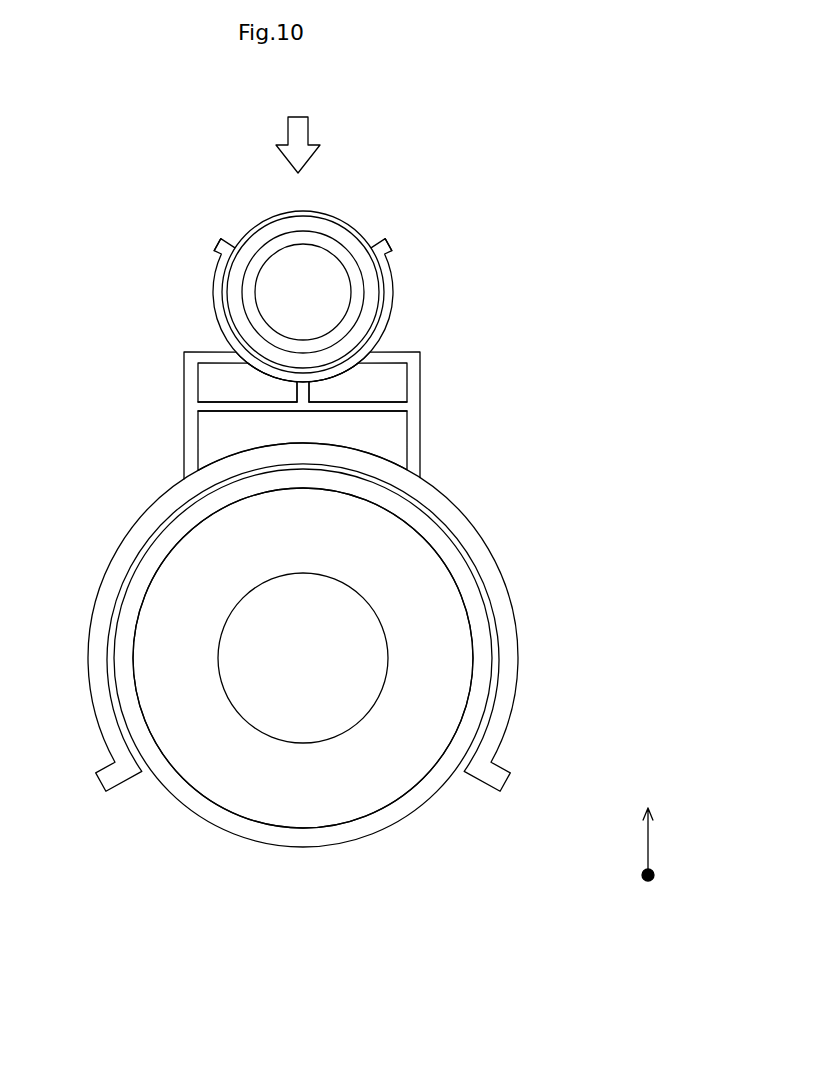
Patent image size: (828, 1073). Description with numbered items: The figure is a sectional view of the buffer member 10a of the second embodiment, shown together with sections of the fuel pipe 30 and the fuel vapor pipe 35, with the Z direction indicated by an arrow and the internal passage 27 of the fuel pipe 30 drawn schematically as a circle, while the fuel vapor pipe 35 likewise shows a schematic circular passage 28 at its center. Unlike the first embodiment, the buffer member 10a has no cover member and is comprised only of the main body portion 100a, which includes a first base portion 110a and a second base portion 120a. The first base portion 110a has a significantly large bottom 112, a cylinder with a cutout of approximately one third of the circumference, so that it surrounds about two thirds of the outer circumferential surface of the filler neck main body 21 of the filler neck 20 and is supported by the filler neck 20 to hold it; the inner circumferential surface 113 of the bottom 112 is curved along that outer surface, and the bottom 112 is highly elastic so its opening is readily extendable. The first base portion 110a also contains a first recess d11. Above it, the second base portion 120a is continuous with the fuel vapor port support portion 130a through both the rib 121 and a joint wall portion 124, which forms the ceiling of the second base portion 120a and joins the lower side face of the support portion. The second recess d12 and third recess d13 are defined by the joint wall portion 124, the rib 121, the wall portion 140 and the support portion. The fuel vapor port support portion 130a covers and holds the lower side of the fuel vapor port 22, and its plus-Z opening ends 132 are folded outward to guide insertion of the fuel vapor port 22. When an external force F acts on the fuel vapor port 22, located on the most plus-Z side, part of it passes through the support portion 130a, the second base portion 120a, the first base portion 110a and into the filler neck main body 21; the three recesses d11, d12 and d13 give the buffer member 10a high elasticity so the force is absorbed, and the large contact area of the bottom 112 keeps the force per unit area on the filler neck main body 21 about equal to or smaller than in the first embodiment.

The buffer member 10a is at (564, 476).
The main body portion 100a is at (532, 221).
The first base portion 110a is at (421, 460).
The bottom 112 is at (493, 560).
The inner circumferential surface 113 is at (500, 680).
The second base portion 120a is at (421, 357).
The rib 121 is at (312, 392).
The joint wall portion 124 is at (391, 360).
The fuel vapor port support portion 130a is at (392, 306).
The opening ends 132 is at (228, 236).
The wall portion 140 is at (358, 405).
The filler neck 20 is at (330, 669).
The filler neck main body 21 is at (407, 765).
The fuel vapor port 22 is at (273, 246).
The internal passage 27 is at (290, 670).
The roller shaft 28 is at (290, 304).
The fuel pipe 30 is at (210, 818).
The fuel vapor pipe 35 is at (313, 228).
The first recess d11 is at (220, 435).
The second recess d12 is at (193, 352).
The third recess d13 is at (400, 352).
The external force F is at (298, 130).
The Z direction Z is at (649, 829).